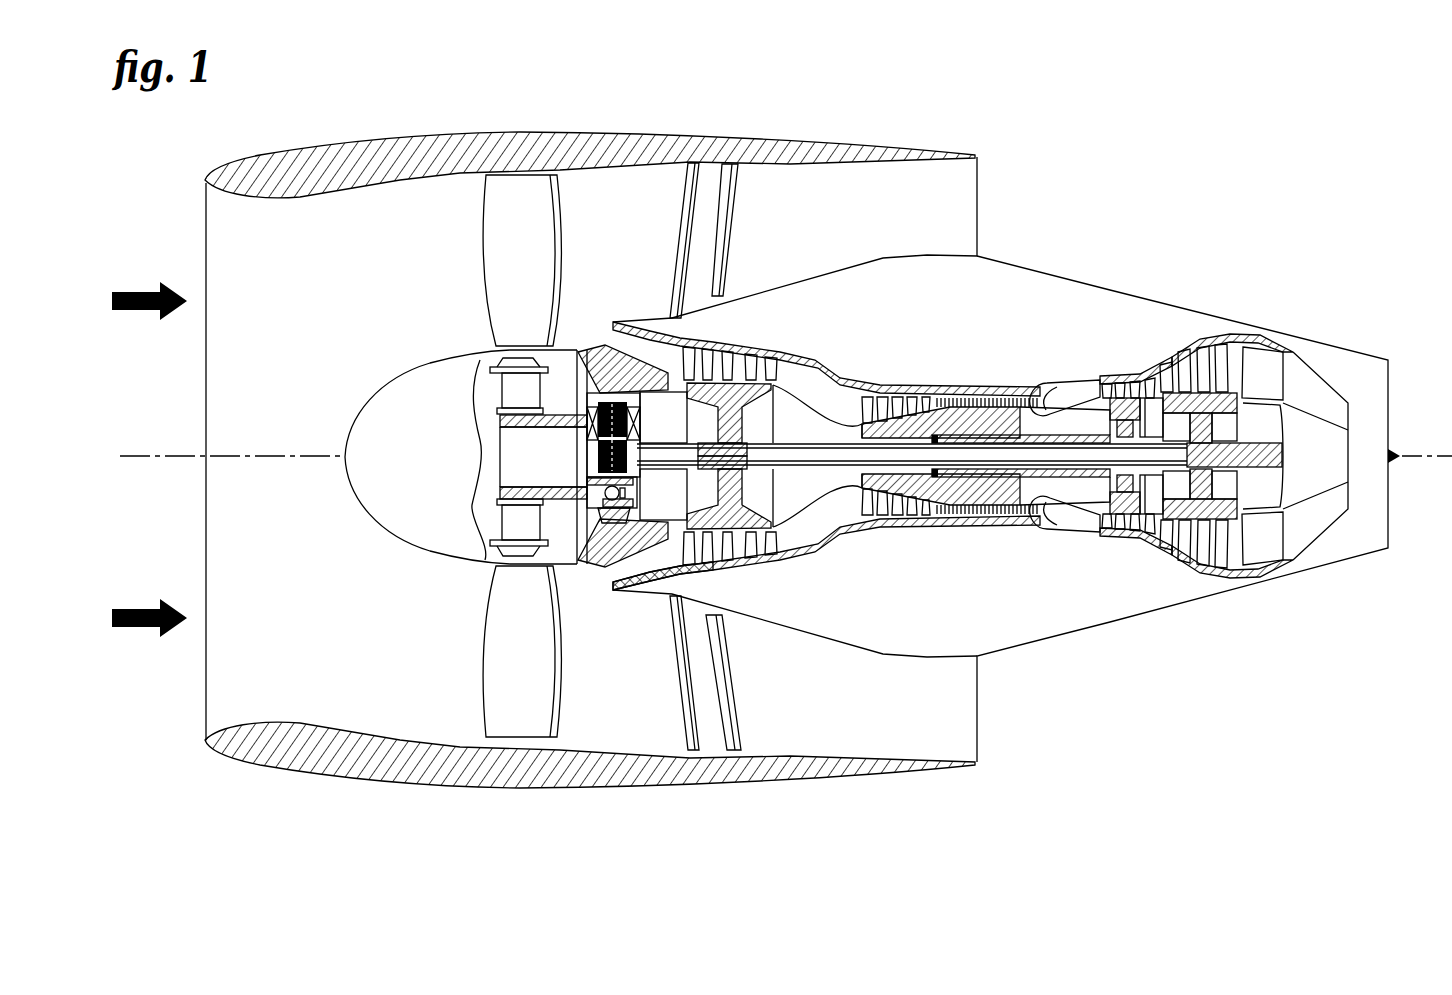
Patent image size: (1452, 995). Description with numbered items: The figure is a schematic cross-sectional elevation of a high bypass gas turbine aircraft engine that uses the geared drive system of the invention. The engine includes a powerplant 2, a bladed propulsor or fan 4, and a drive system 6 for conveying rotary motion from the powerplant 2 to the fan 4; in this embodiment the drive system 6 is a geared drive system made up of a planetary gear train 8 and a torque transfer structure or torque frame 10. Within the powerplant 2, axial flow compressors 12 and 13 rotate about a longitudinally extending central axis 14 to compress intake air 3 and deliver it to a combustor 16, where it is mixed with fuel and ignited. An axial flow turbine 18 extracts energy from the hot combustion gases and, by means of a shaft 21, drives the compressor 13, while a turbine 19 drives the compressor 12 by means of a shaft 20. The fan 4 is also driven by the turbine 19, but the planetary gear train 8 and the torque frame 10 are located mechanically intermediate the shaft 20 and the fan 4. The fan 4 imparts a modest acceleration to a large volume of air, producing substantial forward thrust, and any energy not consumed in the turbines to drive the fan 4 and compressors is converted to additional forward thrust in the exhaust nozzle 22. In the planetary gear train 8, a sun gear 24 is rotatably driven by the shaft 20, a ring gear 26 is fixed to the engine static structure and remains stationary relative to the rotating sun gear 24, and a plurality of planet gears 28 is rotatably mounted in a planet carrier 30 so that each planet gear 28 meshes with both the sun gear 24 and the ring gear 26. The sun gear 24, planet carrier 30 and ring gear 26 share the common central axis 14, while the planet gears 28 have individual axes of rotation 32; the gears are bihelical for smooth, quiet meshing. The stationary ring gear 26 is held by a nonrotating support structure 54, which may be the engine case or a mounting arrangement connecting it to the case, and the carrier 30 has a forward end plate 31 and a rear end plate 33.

The powerplant 2 is at (1005, 283).
The intake air 3 is at (143, 292).
The fan 4 is at (526, 232).
The drive system 6 is at (554, 459).
The planetary gear train 8 is at (643, 385).
The torque frame 10 is at (500, 424).
The axial flow compressor 12 is at (740, 343).
The axial flow compressor 13 is at (890, 389).
The central axis 14 is at (168, 456).
The combustor 16 is at (1060, 393).
The axial flow turbine 18 is at (1137, 378).
The turbine 19 is at (1210, 347).
The shaft 20 is at (832, 446).
The shaft 21 is at (1054, 477).
The exhaust nozzle 22 is at (1390, 420).
The sun gear 24 is at (632, 450).
The ring gear 26 is at (615, 514).
The planet gears 28 is at (634, 428).
The planet carrier 30 is at (578, 384).
The forward end plate 31 is at (575, 505).
The axes of rotation 32 is at (491, 416).
The rear end plate 33 is at (665, 520).
The nonrotating support structure 54 is at (600, 372).